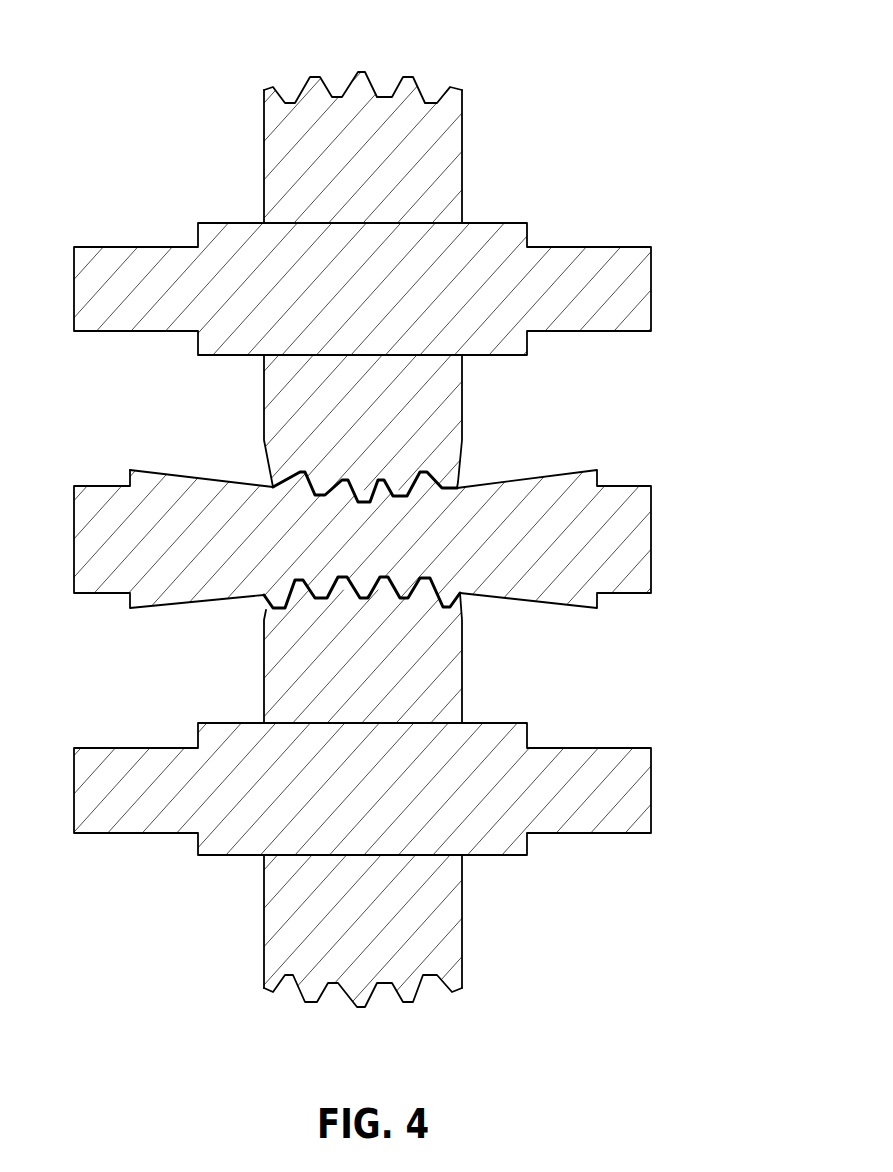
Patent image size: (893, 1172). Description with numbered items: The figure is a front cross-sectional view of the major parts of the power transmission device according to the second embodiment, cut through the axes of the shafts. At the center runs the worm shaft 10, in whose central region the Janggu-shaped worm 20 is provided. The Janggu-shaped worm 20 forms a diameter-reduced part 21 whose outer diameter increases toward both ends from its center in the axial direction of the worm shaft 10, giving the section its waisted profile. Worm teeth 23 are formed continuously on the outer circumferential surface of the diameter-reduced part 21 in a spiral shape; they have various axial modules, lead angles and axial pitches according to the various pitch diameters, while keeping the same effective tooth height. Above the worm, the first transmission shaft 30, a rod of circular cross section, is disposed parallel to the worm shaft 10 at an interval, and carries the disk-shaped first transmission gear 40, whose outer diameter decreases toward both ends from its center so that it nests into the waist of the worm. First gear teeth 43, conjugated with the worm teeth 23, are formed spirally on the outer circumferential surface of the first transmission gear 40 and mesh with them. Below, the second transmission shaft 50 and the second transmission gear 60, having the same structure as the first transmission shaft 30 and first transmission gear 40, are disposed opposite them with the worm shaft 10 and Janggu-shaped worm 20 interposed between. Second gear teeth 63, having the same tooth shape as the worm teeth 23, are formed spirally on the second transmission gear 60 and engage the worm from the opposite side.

The worm shaft 10 is at (397, 556).
The Janggu-shaped worm 20 is at (173, 550).
The diameter-reduced part 21 is at (172, 478).
The worm teeth 23 is at (342, 490).
The first transmission shaft 30 is at (124, 240).
The first transmission gear 40 is at (414, 258).
The first gear teeth 43 is at (360, 73).
The second transmission shaft 50 is at (124, 843).
The second transmission gear 60 is at (387, 752).
The second gear teeth 63 is at (338, 580).